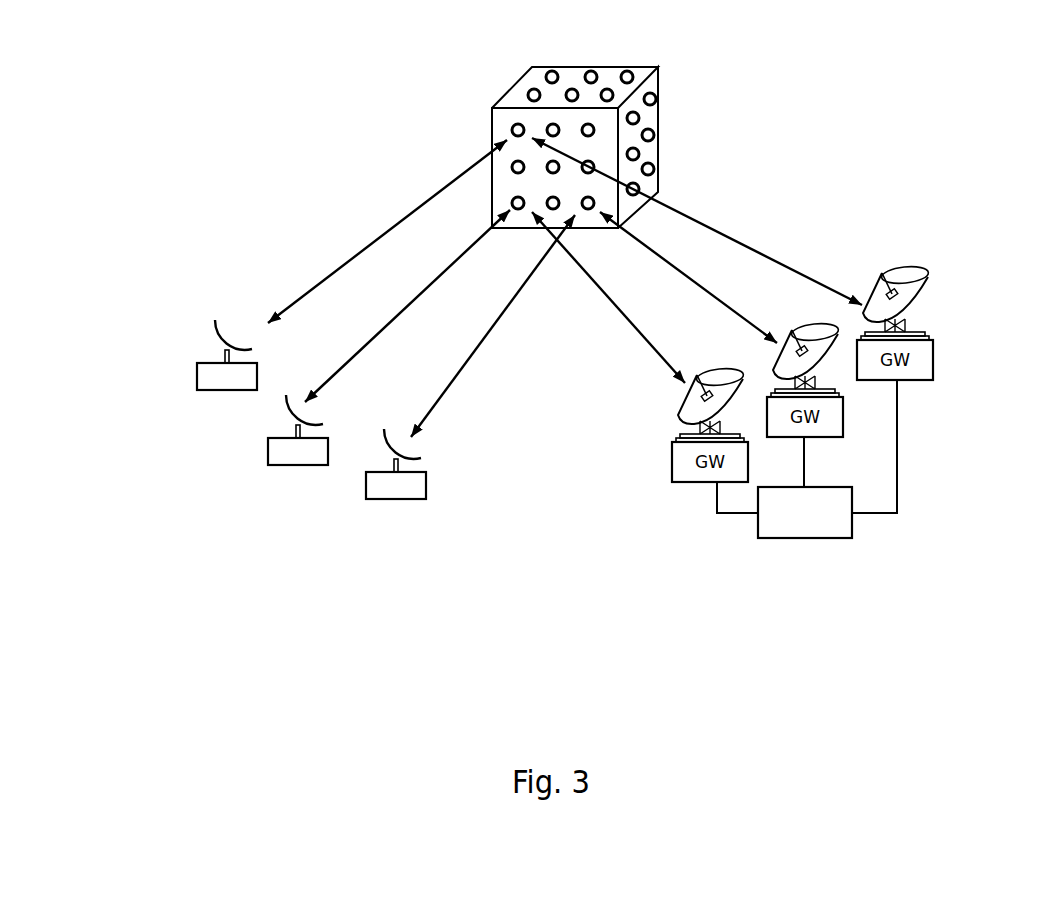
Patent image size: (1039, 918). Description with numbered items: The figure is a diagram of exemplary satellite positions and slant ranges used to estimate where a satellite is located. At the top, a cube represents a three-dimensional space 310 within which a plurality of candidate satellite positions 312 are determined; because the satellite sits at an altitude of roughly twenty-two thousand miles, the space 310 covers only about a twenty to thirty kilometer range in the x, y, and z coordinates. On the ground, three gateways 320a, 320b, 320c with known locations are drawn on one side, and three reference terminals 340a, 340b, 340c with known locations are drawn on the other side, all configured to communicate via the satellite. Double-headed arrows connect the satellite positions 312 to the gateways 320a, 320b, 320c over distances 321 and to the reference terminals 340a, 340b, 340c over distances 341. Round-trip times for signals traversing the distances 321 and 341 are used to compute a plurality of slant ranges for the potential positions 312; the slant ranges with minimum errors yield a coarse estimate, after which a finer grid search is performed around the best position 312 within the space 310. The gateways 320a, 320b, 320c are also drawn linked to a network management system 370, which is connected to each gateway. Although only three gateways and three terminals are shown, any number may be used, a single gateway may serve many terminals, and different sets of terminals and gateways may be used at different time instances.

The 3D space 310 is at (683, 62).
The satellite positions 312 is at (512, 128).
The distances between satellite and terminals 341 is at (474, 348).
The distances between satellite and gateways 321 is at (750, 252).
The reference terminal 340a is at (197, 364).
The reference terminal 340b is at (268, 447).
The reference terminal 340c is at (366, 485).
The gateway 320a is at (933, 365).
The gateway 320b is at (675, 482).
The gateway 320c is at (843, 425).
The network management system (NMS) 370 is at (782, 538).